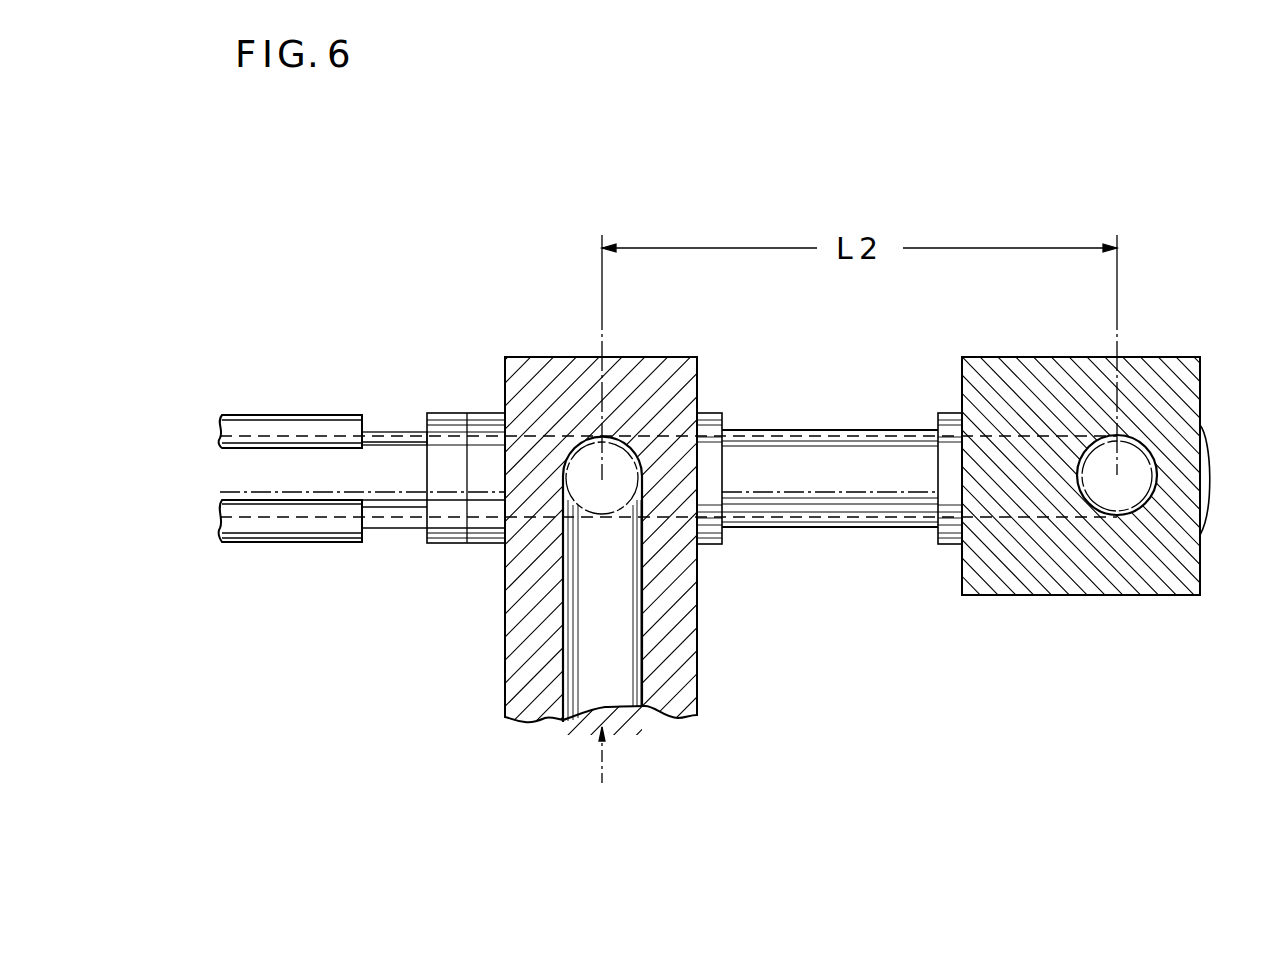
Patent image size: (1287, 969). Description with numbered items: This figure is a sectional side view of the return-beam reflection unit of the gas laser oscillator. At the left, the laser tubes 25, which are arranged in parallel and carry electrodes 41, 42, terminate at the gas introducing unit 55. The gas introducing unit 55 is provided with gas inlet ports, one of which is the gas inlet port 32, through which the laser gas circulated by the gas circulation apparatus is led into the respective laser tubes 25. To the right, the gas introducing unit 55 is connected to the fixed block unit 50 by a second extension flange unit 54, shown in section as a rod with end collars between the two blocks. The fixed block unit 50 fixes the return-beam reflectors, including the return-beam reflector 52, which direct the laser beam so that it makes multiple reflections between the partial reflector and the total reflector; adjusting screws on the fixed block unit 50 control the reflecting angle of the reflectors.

The electrode 41 is at (258, 414).
The electrode 42 is at (270, 544).
The laser tube 25 is at (388, 430).
The gas inlet port 32 is at (563, 477).
The gas introducing unit 55 is at (548, 363).
The second extension flange unit 54 is at (802, 522).
The fixed block unit 50 is at (1192, 400).
The return-beam reflector 52 is at (1147, 507).